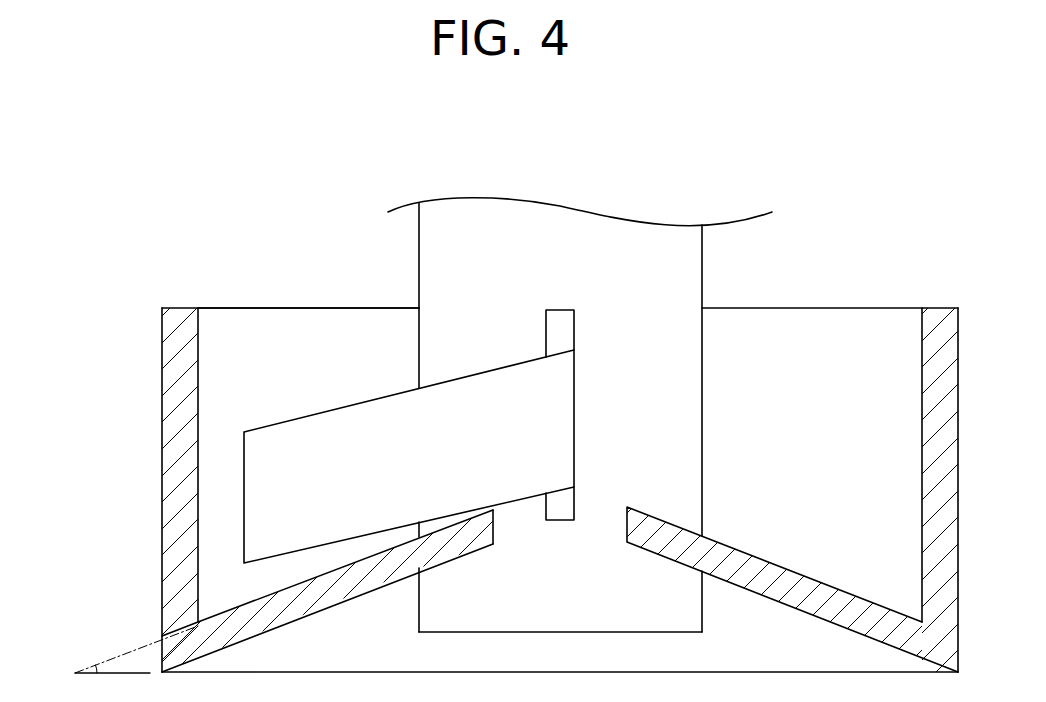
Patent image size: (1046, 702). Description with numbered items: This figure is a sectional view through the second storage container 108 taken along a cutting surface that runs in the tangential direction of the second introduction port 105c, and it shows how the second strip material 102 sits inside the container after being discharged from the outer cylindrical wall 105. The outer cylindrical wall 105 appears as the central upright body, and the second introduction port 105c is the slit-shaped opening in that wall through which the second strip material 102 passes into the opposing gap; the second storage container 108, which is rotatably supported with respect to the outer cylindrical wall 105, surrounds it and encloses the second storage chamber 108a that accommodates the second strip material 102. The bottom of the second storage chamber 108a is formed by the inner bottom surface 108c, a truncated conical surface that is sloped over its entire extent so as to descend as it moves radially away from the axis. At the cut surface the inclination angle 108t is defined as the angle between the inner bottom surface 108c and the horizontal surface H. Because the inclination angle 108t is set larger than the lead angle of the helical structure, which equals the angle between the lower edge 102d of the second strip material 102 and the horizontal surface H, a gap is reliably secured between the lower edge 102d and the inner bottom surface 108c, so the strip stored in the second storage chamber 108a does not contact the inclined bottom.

The second strip material 102 is at (280, 457).
The lower edge of the second strip material 102d is at (465, 513).
The outer cylindrical wall 105 is at (703, 259).
The second introduction port 105c is at (560, 328).
The second storage container 108 is at (222, 306).
The second storage chamber 108a is at (307, 367).
The inner bottom surface of the second storage chamber 108c is at (307, 582).
The inclination angle 108t is at (100, 665).
The horizontal surface H is at (128, 670).